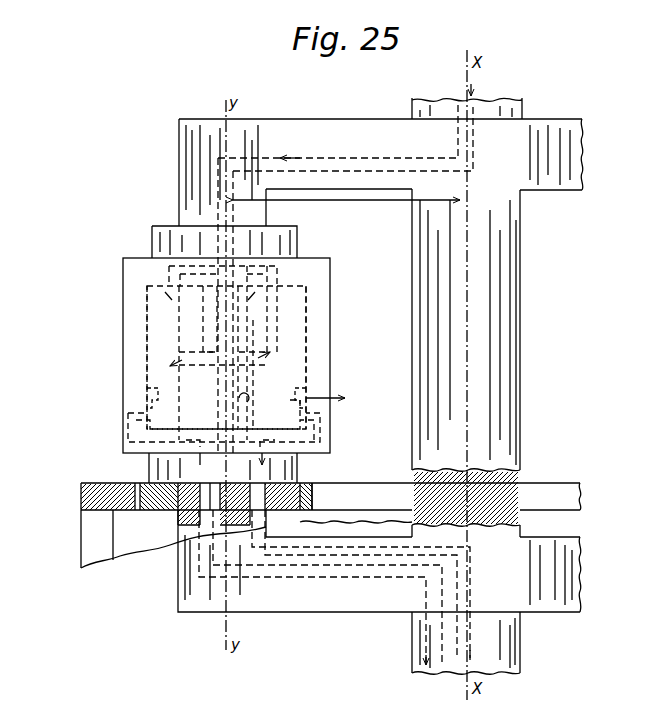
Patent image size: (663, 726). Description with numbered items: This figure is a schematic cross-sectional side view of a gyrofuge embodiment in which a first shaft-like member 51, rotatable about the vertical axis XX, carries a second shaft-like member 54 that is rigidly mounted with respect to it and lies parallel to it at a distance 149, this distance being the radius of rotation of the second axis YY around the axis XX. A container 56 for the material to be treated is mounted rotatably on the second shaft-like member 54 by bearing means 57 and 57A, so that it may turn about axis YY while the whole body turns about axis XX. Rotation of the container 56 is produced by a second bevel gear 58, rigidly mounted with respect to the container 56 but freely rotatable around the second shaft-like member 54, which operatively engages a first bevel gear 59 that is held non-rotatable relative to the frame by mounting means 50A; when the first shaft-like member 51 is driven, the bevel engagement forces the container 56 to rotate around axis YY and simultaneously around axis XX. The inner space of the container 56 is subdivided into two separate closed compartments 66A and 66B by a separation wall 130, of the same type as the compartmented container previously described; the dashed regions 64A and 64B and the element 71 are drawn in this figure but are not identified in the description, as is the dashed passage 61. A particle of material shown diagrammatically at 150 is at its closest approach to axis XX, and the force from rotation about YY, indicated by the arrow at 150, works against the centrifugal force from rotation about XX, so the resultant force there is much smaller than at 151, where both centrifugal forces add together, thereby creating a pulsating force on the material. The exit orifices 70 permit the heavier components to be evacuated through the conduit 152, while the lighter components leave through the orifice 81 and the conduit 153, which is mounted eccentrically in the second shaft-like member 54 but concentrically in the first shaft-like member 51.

The means for non-rotatably mounting the first bevel gear 50A is at (100, 528).
The first shaft-like member 51 is at (515, 245).
The second shaft-like member 54 is at (188, 168).
The container 56 is at (320, 368).
The bearing means 57 is at (158, 238).
The bearing means 57A is at (160, 472).
The second bevel gear 58 is at (306, 486).
The first bevel gear 59 is at (80, 497).
The supply channel 61 is at (471, 157).
The right chamber 64A is at (270, 352).
The left chamber 64B is at (165, 357).
The compartment 66A is at (297, 378).
The compartment 66B is at (152, 375).
The exit orifices 70 is at (127, 418).
The outlet 71 is at (287, 432).
The orifice 81 is at (300, 258).
The separation wall 130 is at (240, 402).
The distance 149 is at (346, 209).
The particle of material to be treated 150 is at (300, 388).
The particle of material to be treated 151 is at (145, 398).
The conduit 152 is at (255, 320).
The conduit 153 is at (300, 417).